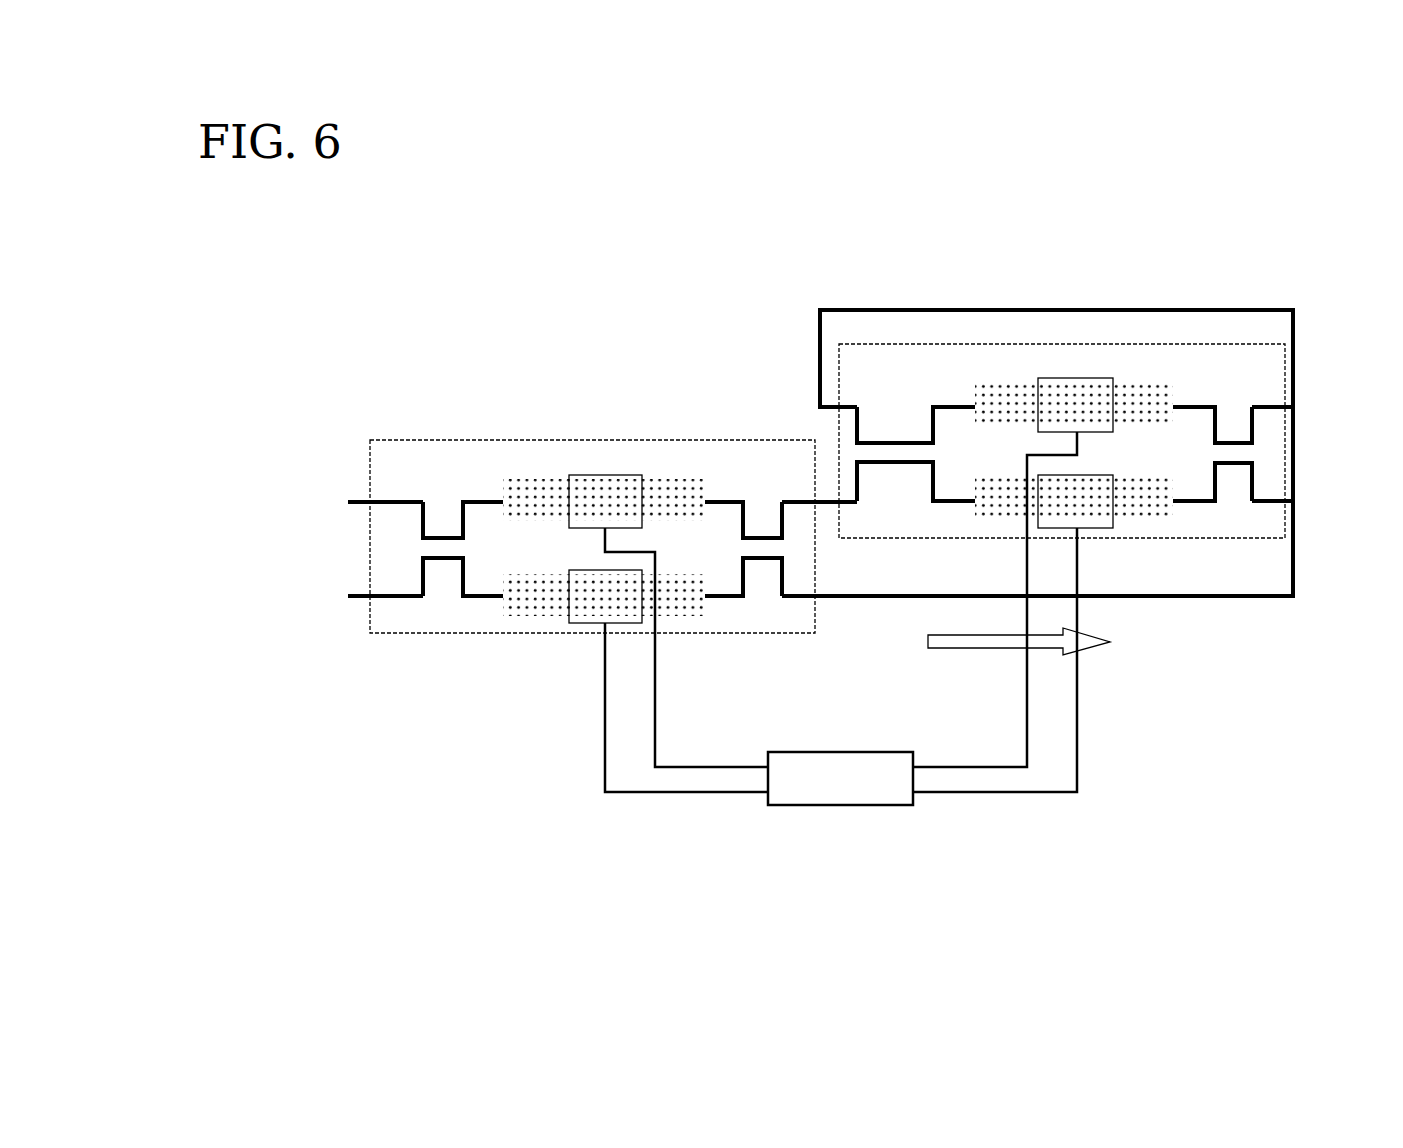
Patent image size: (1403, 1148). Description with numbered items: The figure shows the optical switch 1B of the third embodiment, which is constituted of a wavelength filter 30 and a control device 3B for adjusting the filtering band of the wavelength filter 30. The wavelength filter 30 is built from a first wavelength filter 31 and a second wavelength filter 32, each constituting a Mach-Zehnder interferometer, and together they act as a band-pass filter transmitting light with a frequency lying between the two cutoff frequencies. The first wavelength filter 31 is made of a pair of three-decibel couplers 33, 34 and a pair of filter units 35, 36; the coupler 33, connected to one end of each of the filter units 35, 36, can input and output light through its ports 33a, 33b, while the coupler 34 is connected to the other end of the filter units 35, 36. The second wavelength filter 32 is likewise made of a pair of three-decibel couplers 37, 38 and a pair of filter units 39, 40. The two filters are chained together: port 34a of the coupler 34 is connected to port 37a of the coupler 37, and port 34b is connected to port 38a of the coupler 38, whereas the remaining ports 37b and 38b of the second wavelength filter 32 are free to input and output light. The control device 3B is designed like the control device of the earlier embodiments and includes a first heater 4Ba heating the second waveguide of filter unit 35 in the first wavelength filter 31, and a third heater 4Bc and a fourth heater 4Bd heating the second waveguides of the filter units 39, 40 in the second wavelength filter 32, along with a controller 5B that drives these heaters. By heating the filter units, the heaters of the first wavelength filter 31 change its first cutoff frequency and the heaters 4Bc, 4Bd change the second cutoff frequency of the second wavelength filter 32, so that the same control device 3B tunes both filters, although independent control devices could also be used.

The optical switch 1B is at (1257, 262).
The wavelength filter 30 is at (898, 298).
The first wavelength filter 31 is at (533, 639).
The second wavelength filter 32 is at (980, 340).
The 3 dB coupler 33 is at (427, 598).
The port 33a is at (380, 498).
The port 33b is at (387, 598).
The 3 dB coupler 34 is at (747, 598).
The port 34a is at (807, 498).
The port 34b is at (793, 598).
The filter unit 35 is at (528, 483).
The filter unit 36 is at (687, 612).
The 3 dB coupler 37 is at (858, 504).
The port 37a is at (845, 504).
The port 37b is at (830, 400).
The 3 dB coupler 38 is at (1223, 503).
The port 38a is at (1263, 503).
The port 38b is at (1283, 400).
The filter unit 39 is at (1167, 390).
The filter unit 40 is at (1160, 522).
The first heater 4Ba is at (563, 528).
The third heater 4Bc is at (1118, 433).
The fourth heater 4Bd is at (592, 625).
The controller 5B is at (847, 807).
The control device 3B is at (1056, 812).